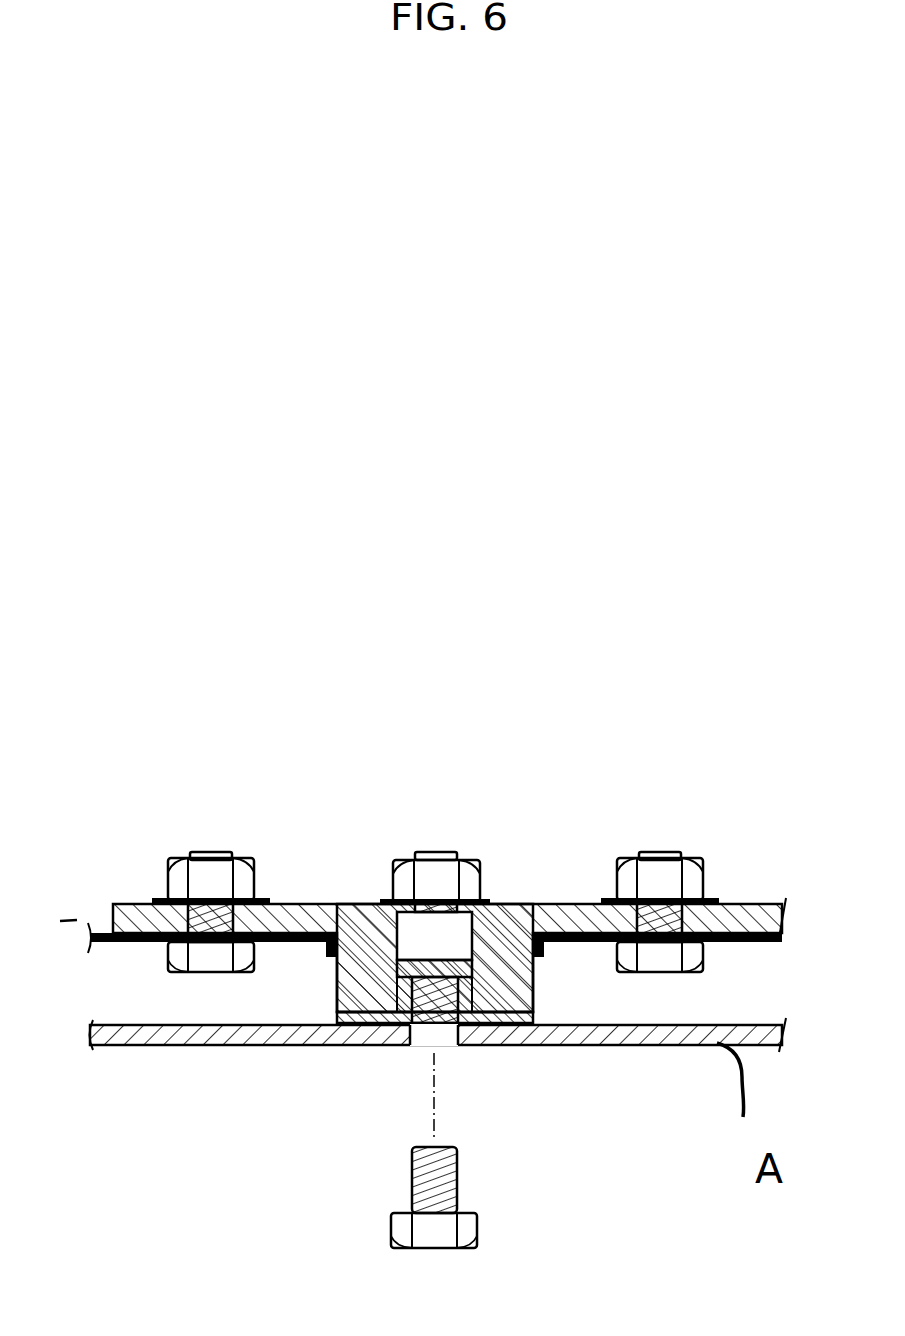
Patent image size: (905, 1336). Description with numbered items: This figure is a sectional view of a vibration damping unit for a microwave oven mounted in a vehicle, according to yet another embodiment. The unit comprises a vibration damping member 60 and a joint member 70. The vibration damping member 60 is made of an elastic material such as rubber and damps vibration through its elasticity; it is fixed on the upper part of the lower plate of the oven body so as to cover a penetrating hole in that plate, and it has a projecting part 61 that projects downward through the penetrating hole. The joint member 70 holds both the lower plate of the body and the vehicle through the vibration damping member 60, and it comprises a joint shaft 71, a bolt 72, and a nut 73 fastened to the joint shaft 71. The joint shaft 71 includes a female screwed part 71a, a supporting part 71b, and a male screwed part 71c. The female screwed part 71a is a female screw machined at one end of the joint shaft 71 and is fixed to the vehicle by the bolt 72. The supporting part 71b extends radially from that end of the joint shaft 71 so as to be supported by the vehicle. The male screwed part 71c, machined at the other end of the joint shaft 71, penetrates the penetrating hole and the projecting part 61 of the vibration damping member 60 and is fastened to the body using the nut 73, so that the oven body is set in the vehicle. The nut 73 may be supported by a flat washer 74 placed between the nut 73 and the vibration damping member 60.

The vibration damping member 60 is at (572, 908).
The projecting part 61 is at (533, 980).
The joint member 70 is at (384, 842).
The joint shaft 71 is at (442, 950).
The female screwed part 71a is at (416, 1002).
The supporting part 71b is at (540, 1020).
The male screwed part 71c is at (435, 852).
The bolt 72 is at (447, 1185).
The nut 73 is at (407, 880).
The flat washer 74 is at (488, 902).